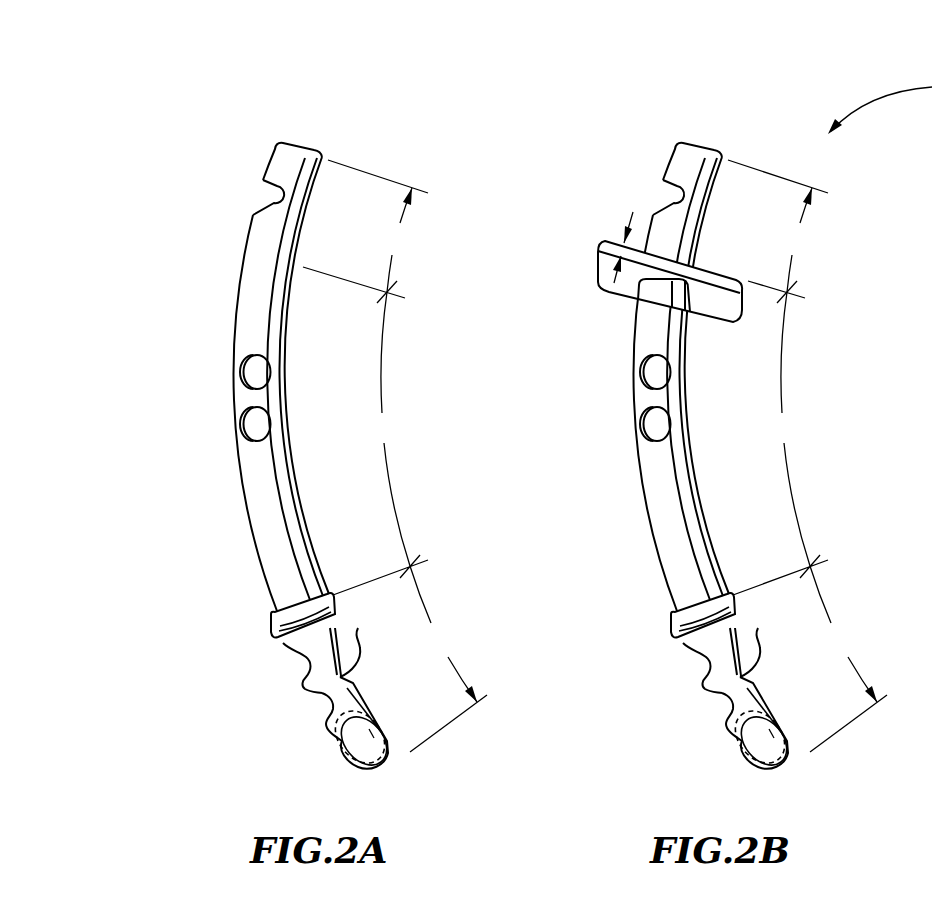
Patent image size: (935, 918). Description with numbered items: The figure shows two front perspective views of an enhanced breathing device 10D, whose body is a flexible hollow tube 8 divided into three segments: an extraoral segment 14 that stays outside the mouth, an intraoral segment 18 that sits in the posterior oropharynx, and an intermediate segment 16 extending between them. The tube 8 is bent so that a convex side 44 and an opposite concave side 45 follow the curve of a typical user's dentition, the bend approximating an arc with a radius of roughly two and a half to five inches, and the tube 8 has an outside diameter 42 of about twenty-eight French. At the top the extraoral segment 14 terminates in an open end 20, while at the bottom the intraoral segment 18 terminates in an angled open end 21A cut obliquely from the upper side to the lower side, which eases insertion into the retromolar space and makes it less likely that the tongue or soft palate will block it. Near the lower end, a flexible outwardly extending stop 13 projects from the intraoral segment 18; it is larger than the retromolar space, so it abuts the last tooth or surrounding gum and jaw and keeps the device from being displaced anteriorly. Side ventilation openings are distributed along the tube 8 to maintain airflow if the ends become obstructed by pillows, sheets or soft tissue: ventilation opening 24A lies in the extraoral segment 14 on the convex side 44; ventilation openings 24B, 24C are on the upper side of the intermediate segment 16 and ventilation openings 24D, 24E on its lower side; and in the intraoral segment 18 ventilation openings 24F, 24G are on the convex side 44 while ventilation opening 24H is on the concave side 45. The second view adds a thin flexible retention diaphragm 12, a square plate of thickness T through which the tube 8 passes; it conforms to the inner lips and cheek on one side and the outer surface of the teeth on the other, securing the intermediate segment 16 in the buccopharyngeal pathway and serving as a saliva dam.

In FIG. 2A, the flexible hollow tube 8 is at (250, 543).
In FIG. 2B, the flexible hollow tube 8 is at (666, 463).
In FIG. 2A, the enhanced breathing device 10D is at (430, 132).
In FIG. 2B, the retention diaphragm 12 is at (612, 281).
In FIG. 2A, the stop 13 is at (280, 640).
In FIG. 2B, the stop 13 is at (653, 635).
In FIG. 2A, the extraoral segment 14 is at (365, 231).
In FIG. 2B, the extraoral segment 14 is at (778, 231).
In FIG. 2A, the intermediate segment 16 is at (380, 443).
In FIG. 2B, the intermediate segment 16 is at (780, 443).
In FIG. 2A, the intraoral segment 18 is at (448, 659).
In FIG. 2B, the intraoral segment 18 is at (848, 659).
In FIG. 2A, the open end 20 is at (306, 148).
In FIG. 2B, the open end 20 is at (717, 122).
In FIG. 2A, the angled open end 21A is at (388, 765).
In FIG. 2B, the angled open end 21A is at (811, 770).
In FIG. 2A, the ventilation opening 24A is at (274, 194).
In FIG. 2B, the ventilation opening 24A is at (621, 172).
In FIG. 2A, the ventilation opening 24B is at (244, 372).
In FIG. 2B, the ventilation opening 24B is at (584, 381).
In FIG. 2A, the ventilation opening 24C is at (244, 426).
In FIG. 2B, the ventilation opening 24C is at (584, 433).
In FIG. 2A, the ventilation opening 24D is at (263, 372).
In FIG. 2B, the ventilation opening 24D is at (706, 357).
In FIG. 2A, the ventilation opening 24E is at (263, 424).
In FIG. 2B, the ventilation opening 24E is at (704, 414).
In FIG. 2A, the ventilation opening 24F is at (307, 664).
In FIG. 2B, the ventilation opening 24F is at (657, 679).
In FIG. 2A, the ventilation opening 24G is at (327, 718).
In FIG. 2B, the ventilation opening 24G is at (679, 729).
In FIG. 2A, the ventilation opening 24H is at (339, 674).
In FIG. 2B, the ventilation opening 24H is at (769, 636).
In FIG. 2A, the outside diameter 42 is at (244, 500).
In FIG. 2B, the outside diameter 42 is at (607, 505).
In FIG. 2A, the convex side 44 is at (234, 298).
In FIG. 2B, the convex side 44 is at (592, 307).
In FIG. 2A, the concave side 45 is at (291, 491).
In FIG. 2B, the concave side 45 is at (705, 379).
In FIG. 2B, the thickness T is at (628, 233).